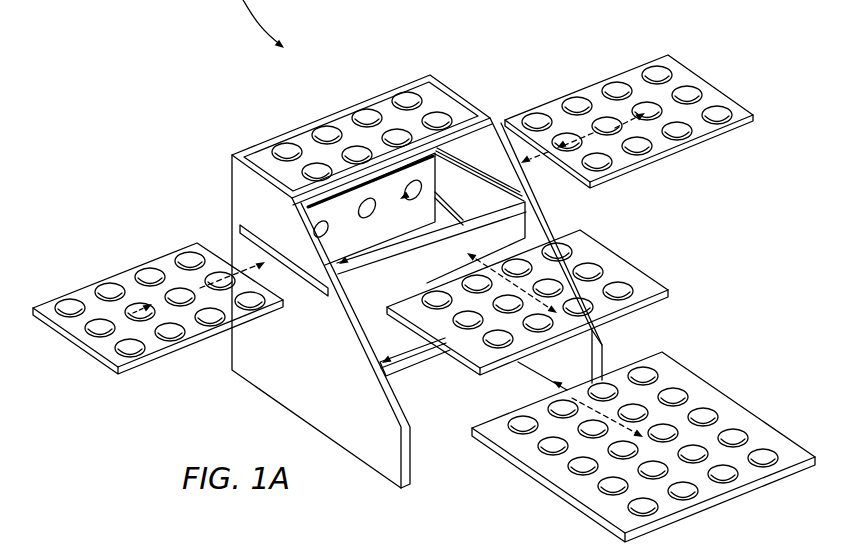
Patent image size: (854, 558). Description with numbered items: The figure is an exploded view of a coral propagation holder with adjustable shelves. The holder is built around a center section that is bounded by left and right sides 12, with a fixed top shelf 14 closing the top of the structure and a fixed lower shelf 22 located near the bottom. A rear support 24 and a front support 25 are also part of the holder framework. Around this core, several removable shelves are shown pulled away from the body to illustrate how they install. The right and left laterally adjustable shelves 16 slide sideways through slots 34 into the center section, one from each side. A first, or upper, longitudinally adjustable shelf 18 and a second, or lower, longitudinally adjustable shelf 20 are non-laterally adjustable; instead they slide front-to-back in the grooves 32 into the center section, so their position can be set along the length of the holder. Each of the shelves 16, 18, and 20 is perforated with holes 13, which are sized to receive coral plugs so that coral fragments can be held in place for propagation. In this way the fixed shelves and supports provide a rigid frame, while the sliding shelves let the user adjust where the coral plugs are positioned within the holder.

The left and right sides 12 is at (273, 384).
The holes 13 is at (70, 307).
The fixed top shelf 14 is at (393, 125).
The right and left laterally adjustable shelves 16 is at (130, 283).
The first longitudinally adjustable shelf 18 is at (613, 273).
The second longitudinally adjustable shelf 20 is at (705, 397).
The fixed lower shelf 22 is at (427, 352).
The rear support 24 is at (417, 187).
The front support 25 is at (417, 268).
The grooves 32 is at (346, 265).
The slots 34 is at (243, 233).